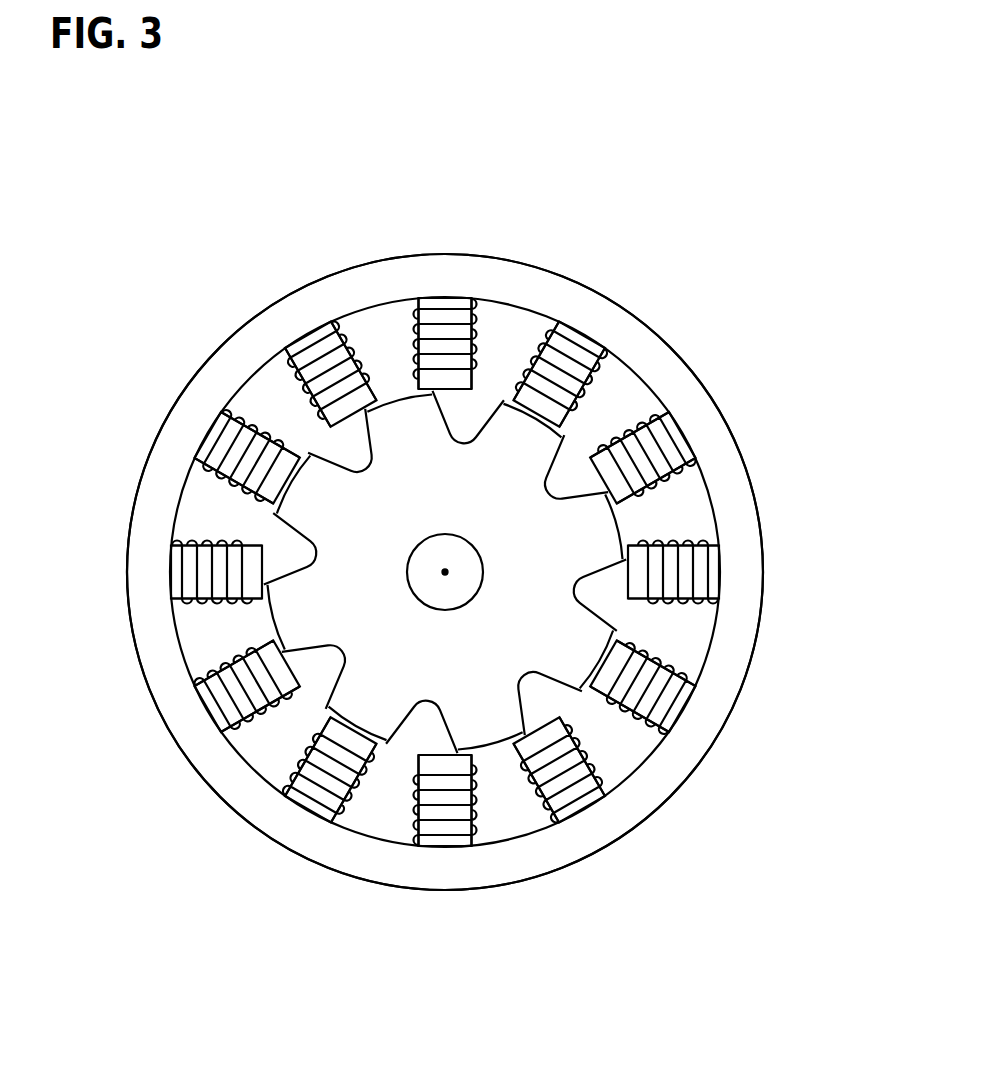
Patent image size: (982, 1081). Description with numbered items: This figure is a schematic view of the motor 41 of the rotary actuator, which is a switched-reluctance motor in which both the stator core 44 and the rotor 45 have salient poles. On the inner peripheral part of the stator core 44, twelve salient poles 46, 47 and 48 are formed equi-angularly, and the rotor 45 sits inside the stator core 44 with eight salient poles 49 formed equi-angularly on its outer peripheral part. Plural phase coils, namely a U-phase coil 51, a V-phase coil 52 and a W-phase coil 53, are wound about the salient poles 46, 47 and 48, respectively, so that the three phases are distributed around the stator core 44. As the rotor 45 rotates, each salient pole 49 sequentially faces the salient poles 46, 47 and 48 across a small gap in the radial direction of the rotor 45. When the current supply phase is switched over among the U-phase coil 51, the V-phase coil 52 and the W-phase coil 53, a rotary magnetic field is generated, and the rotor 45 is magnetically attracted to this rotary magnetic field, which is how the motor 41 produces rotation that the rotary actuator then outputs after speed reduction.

The motor 41 is at (663, 279).
The stator core 44 is at (372, 274).
The rotor 45 is at (495, 490).
The salient pole 46 is at (452, 380).
The salient pole 47 is at (503, 402).
The salient pole 48 is at (343, 414).
The salient pole 49 is at (285, 610).
The U-phase coil 51 is at (436, 300).
The V-phase coil 52 is at (567, 337).
The W-phase coil 53 is at (300, 347).